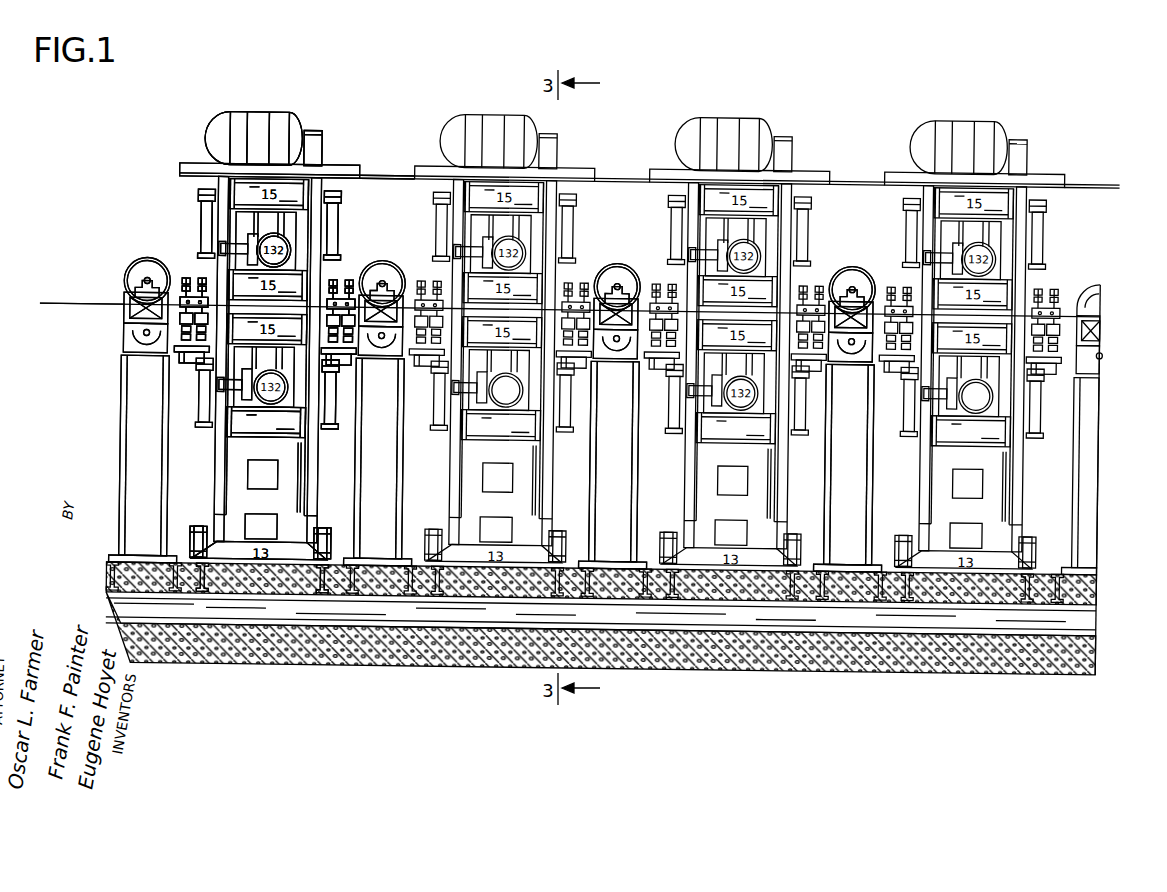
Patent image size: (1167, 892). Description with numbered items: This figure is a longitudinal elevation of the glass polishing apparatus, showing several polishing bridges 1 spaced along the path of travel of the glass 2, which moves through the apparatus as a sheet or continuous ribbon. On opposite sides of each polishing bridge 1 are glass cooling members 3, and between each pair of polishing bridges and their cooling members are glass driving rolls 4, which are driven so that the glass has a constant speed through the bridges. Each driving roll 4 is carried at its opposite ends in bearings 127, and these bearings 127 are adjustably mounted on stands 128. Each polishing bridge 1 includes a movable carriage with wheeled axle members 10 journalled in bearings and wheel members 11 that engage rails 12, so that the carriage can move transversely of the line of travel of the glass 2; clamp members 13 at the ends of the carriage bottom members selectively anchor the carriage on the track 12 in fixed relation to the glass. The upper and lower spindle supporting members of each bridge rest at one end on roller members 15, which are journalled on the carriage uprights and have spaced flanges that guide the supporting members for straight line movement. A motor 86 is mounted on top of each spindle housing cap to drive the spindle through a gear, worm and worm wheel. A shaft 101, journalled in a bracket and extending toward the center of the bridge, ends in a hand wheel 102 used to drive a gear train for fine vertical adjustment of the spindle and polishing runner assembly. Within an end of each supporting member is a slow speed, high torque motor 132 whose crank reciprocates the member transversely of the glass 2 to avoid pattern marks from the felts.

The polishing bridge 1 is at (611, 337).
The glass 2 is at (62, 302).
The glass cooling member 3 is at (491, 284).
The glass driving roll 4 is at (472, 398).
The wheeled axle member 10 is at (516, 528).
The wheel member 11 is at (611, 523).
The rail 12 is at (493, 593).
The clamp member 13 is at (259, 550).
The roller member 15 is at (560, 443).
The motor 86 is at (342, 117).
The shaft 101 is at (524, 314).
The hand wheel 102 is at (519, 311).
The bearing 127 is at (634, 413).
The stand 128 is at (575, 417).
The motor 132 is at (273, 250).